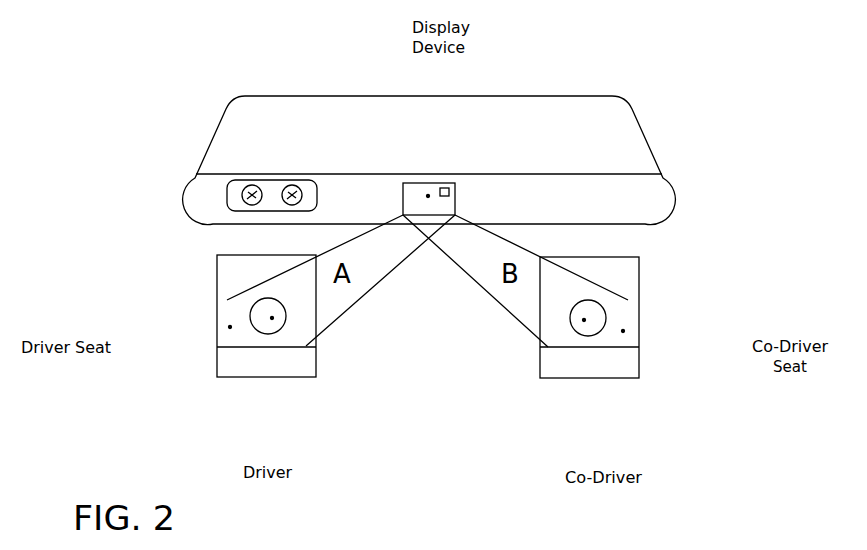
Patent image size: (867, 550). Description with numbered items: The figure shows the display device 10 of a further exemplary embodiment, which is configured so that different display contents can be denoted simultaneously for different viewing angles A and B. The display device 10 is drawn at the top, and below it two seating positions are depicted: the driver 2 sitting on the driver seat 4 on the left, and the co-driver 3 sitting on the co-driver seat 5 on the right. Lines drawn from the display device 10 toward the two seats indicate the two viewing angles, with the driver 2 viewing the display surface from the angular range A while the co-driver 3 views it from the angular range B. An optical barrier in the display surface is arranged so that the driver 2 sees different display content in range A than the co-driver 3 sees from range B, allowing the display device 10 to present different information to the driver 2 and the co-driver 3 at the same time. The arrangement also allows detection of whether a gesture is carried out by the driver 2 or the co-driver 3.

The display device 10 is at (428, 196).
The driver 2 is at (272, 318).
The co-driver 3 is at (584, 320).
The driver seat 4 is at (230, 327).
The co-driver seat 5 is at (623, 331).